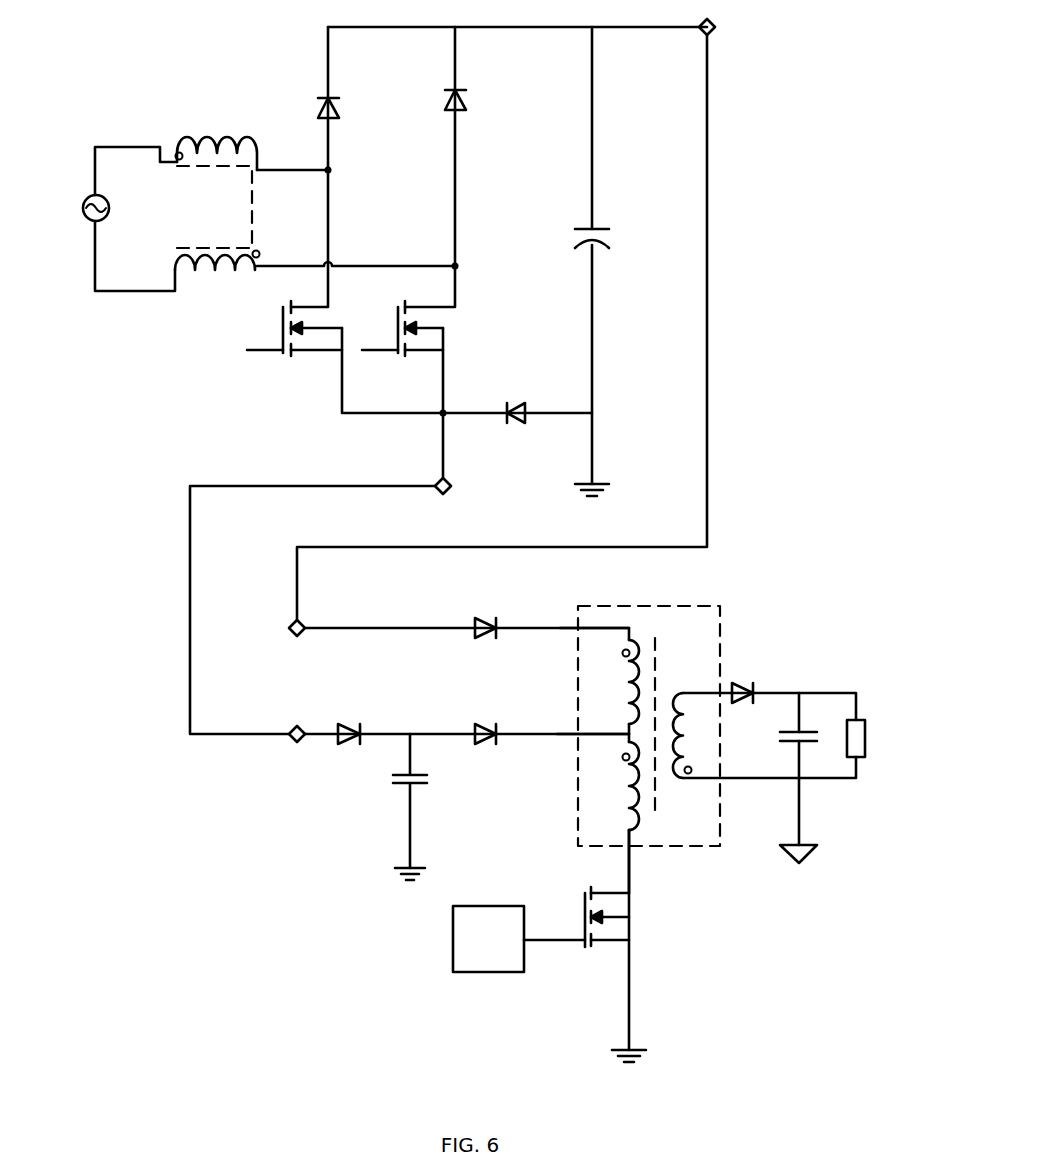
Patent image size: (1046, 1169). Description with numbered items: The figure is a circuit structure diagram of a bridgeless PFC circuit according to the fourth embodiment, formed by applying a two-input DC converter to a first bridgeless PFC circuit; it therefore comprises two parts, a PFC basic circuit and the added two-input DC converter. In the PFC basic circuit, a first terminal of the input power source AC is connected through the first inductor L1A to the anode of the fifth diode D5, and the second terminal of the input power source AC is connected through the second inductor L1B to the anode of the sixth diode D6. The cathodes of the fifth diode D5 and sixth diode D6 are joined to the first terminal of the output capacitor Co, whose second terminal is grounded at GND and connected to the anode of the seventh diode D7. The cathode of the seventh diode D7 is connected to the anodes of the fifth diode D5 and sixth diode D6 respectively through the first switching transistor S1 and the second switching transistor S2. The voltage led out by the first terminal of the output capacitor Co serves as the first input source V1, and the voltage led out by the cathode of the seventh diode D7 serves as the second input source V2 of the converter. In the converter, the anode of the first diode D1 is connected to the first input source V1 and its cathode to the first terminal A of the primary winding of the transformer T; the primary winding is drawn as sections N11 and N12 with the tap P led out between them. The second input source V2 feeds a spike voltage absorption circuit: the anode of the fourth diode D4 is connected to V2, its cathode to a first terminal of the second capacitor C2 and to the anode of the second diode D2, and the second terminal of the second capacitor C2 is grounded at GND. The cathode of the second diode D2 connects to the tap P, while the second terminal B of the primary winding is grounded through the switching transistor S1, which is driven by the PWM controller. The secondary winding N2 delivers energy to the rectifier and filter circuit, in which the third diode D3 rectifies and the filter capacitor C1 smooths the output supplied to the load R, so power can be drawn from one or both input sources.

The input power source AC is at (111, 219).
The first inductor L1A is at (217, 178).
The second inductor L1B is at (217, 279).
The fifth diode D5 is at (343, 112).
The sixth diode D6 is at (468, 106).
The seventh diode D7 is at (515, 398).
The first switching transistor S1 is at (438, 624).
The second switching transistor S2 is at (423, 328).
The output capacitor Co is at (578, 215).
The first input source V1 is at (693, 42).
The second input source V2 is at (428, 477).
The ground GND is at (502, 790).
The first diode D1 is at (487, 642).
The second diode D2 is at (487, 750).
The third diode D3 is at (743, 675).
The fourth diode D4 is at (348, 716).
The second capacitor C2 is at (396, 801).
The filter capacitor C1 is at (788, 797).
The load R is at (866, 740).
The transformer T is at (649, 726).
The first primary winding section N11 is at (609, 682).
The second primary winding section N12 is at (609, 786).
The secondary winding N2 is at (693, 735).
The first terminal of the primary winding A is at (591, 614).
The tap of the primary winding P is at (590, 720).
The second terminal of the primary winding B is at (641, 861).
The PWM controller PWM is at (488, 939).